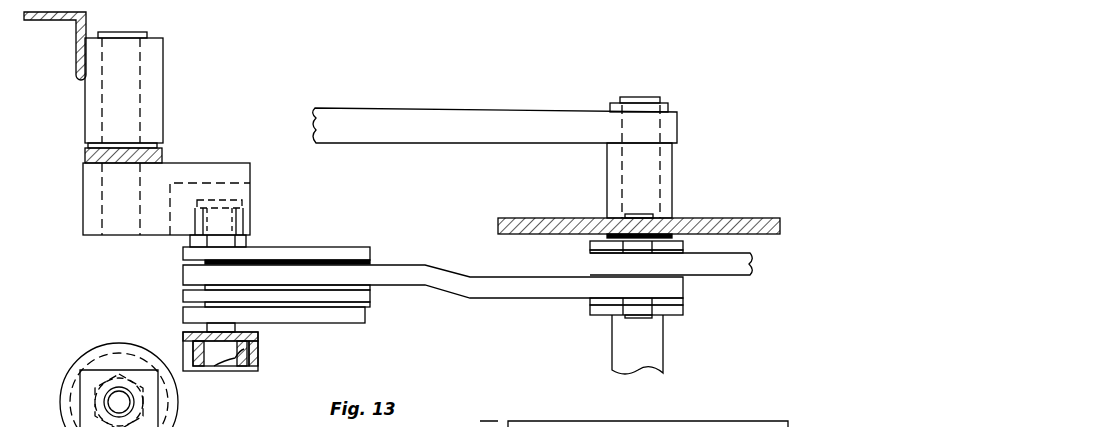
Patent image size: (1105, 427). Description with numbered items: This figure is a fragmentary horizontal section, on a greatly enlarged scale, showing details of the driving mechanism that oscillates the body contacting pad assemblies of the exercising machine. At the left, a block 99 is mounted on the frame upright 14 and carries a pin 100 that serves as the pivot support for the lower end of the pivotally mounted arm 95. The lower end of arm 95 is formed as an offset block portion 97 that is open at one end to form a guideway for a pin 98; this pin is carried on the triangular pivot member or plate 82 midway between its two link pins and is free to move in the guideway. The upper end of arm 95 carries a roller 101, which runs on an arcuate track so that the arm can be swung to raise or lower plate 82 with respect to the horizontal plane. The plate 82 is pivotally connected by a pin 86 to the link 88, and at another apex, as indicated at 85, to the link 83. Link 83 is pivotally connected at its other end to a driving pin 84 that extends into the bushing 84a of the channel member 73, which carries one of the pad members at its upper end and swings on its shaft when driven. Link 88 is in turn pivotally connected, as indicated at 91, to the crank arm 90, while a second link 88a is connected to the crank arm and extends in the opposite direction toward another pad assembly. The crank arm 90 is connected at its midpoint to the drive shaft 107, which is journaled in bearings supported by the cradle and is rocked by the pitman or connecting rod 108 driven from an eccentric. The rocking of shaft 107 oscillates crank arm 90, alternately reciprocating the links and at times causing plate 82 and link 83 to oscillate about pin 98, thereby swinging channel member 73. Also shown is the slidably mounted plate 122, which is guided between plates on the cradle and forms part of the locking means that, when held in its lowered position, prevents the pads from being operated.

The frame upright 14 is at (50, 26).
The pin 100 is at (148, 34).
The block 99 is at (163, 97).
The pivotally mounted arm 95 is at (85, 156).
The offset block portion 97 is at (250, 168).
The pin 98 is at (245, 203).
The pivot member 82 is at (372, 255).
The pin 86 is at (183, 263).
The link 88 is at (480, 298).
The pivotal connection 85 is at (357, 305).
The link 83 is at (345, 323).
The driving pin 84 is at (207, 326).
The channel member 73 is at (258, 353).
The bushing 84a is at (194, 371).
The roller 101 is at (60, 404).
The pitman 108 is at (512, 105).
The pivotal connection 91 is at (675, 196).
The slidably mounted plate 122 is at (552, 218).
The crank arm 90 is at (590, 272).
The link 88a is at (770, 276).
The drive shaft 107 is at (665, 355).